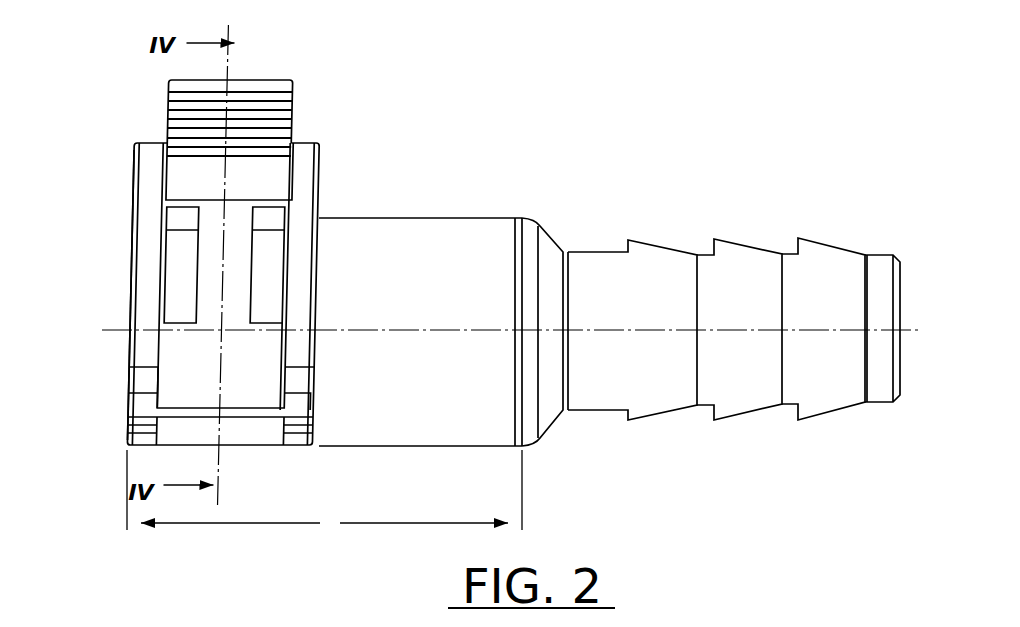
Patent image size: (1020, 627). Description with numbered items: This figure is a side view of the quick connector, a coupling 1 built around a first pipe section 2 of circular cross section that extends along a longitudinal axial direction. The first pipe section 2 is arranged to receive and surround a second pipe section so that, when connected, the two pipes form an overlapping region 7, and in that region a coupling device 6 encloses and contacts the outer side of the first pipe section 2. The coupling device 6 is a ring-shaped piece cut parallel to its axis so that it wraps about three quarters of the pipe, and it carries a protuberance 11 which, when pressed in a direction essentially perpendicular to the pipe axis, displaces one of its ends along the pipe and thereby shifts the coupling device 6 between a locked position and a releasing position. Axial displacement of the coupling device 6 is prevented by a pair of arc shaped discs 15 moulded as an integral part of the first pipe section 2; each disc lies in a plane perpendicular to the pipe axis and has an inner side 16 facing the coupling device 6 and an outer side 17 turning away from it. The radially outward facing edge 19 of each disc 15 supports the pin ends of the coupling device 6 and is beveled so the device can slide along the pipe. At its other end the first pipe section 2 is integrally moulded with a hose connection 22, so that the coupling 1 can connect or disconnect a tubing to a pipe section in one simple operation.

The coupling 1 is at (555, 78).
The first pipe section 2 is at (468, 240).
The coupling device 6 is at (197, 363).
The overlapping region 7 is at (324, 490).
The protuberance 11 is at (270, 85).
The arc shaped discs 15 is at (120, 175).
The inner side 16 is at (163, 268).
The outer side 17 is at (130, 300).
The edge 19 is at (147, 158).
The hose connection 22 is at (750, 262).